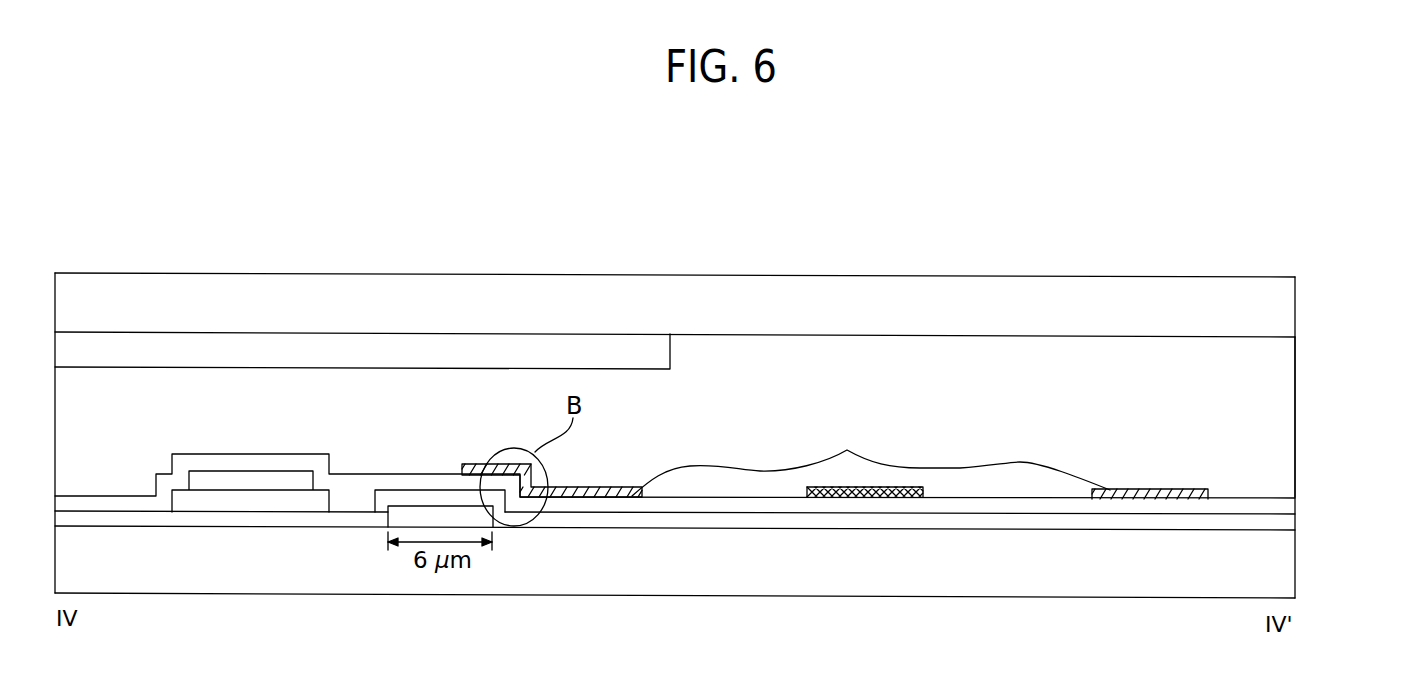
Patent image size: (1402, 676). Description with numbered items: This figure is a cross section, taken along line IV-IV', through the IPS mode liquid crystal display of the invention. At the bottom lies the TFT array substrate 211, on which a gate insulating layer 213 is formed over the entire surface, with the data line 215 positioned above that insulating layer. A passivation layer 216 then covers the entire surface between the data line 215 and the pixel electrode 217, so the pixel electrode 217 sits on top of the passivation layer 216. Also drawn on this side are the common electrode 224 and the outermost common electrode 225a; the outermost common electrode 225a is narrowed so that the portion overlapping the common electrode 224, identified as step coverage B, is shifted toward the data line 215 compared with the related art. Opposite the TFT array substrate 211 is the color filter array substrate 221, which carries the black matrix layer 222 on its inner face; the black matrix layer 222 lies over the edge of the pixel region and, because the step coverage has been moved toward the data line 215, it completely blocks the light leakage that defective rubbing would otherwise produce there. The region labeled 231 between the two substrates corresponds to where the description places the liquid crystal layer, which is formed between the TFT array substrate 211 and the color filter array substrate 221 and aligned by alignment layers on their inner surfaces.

The TFT array substrate 211 is at (1283, 559).
The gate insulating layer 213 is at (1283, 523).
The data line 215 is at (250, 480).
The passivation layer 216 is at (1287, 509).
The pixel electrode 217 is at (862, 498).
The color filter array substrate 221 is at (1283, 306).
The black matrix layer 222 is at (405, 352).
The common electrode 224 is at (871, 457).
The outermost common electrode 225a is at (483, 518).
The liquid crystal layer 231 is at (1283, 415).